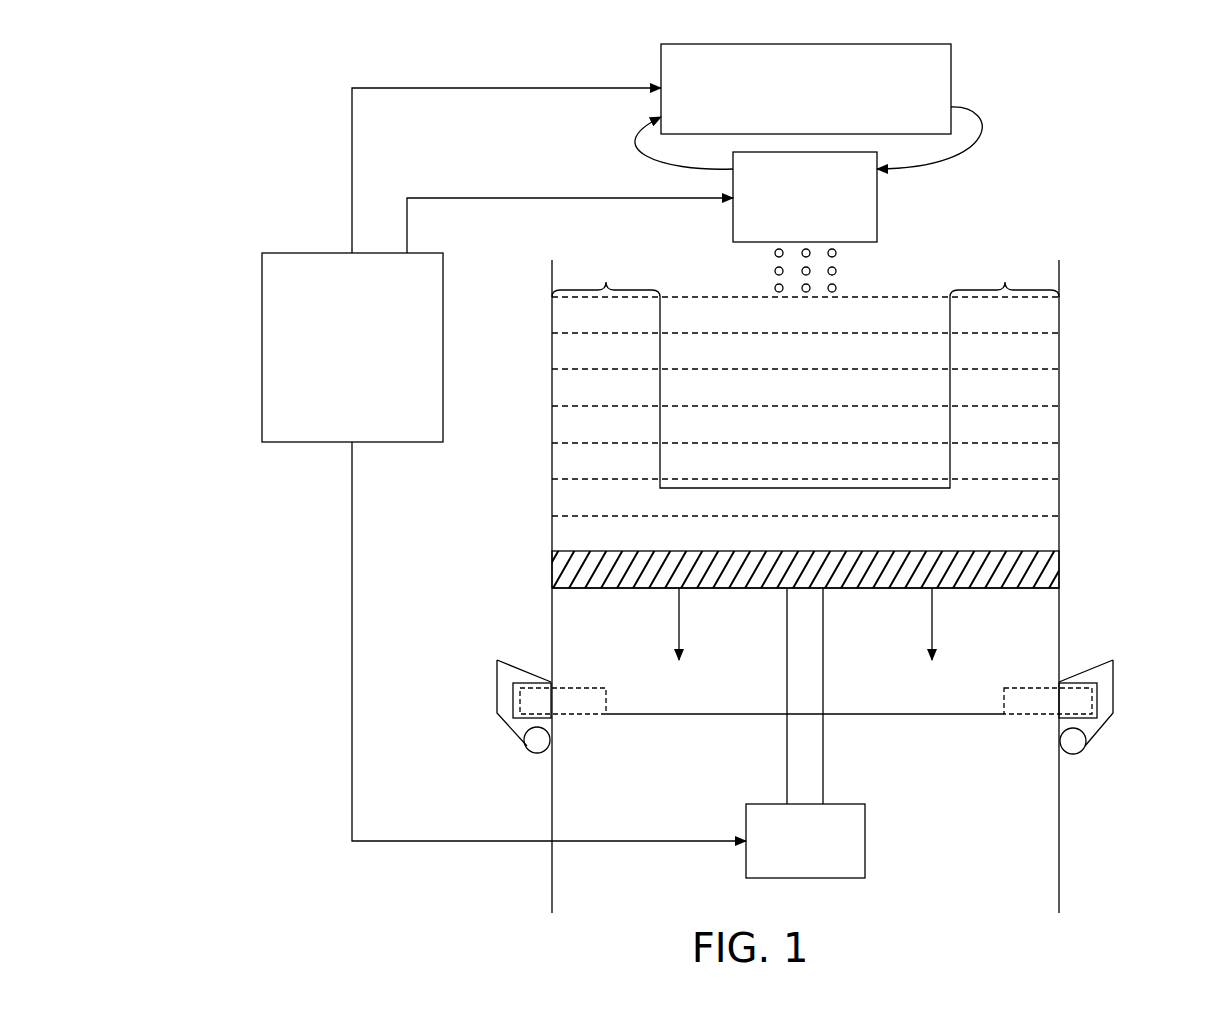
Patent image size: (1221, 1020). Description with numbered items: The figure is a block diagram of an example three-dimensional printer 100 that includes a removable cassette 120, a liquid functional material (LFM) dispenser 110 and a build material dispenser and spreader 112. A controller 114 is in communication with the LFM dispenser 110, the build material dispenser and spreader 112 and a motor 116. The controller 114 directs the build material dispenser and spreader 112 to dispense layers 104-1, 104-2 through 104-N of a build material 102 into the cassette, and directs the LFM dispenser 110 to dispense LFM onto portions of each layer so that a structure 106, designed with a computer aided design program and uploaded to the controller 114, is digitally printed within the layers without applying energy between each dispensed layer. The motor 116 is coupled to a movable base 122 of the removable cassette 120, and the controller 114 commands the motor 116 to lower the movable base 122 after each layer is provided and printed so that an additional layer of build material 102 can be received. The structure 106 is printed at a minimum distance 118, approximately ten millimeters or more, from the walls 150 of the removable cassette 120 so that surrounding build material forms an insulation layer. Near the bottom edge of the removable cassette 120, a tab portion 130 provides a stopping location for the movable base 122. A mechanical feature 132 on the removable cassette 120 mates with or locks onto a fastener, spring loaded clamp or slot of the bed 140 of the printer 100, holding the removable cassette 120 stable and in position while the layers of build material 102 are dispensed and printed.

The 3D printer 100 is at (89, 55).
The build material 102 is at (570, 530).
The layer 104-1 is at (1050, 529).
The layer 104-2 is at (1050, 494).
The layer 104-N is at (1050, 315).
The structure 106 is at (805, 392).
The liquid functional material (LFM) dispenser 110 is at (756, 204).
The build material dispenser and spreader 112 is at (821, 106).
The controller 114 is at (504, 464).
The motor 116 is at (805, 733).
The minimum distance 118 is at (805, 274).
The removable cassette 120 is at (1059, 613).
The movable base 122 is at (1059, 578).
The tab portion 130 is at (806, 701).
The mechanical feature 132 is at (530, 702).
The bed 140 is at (1050, 815).
The walls 150 is at (552, 406).